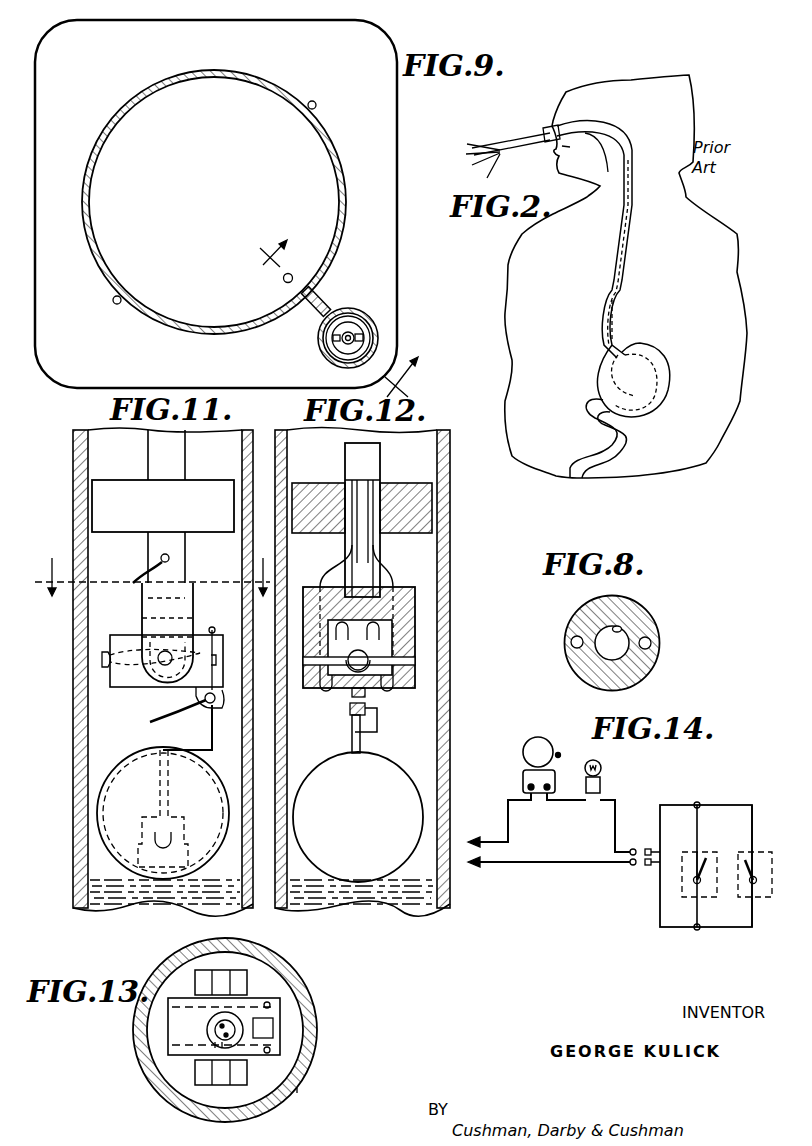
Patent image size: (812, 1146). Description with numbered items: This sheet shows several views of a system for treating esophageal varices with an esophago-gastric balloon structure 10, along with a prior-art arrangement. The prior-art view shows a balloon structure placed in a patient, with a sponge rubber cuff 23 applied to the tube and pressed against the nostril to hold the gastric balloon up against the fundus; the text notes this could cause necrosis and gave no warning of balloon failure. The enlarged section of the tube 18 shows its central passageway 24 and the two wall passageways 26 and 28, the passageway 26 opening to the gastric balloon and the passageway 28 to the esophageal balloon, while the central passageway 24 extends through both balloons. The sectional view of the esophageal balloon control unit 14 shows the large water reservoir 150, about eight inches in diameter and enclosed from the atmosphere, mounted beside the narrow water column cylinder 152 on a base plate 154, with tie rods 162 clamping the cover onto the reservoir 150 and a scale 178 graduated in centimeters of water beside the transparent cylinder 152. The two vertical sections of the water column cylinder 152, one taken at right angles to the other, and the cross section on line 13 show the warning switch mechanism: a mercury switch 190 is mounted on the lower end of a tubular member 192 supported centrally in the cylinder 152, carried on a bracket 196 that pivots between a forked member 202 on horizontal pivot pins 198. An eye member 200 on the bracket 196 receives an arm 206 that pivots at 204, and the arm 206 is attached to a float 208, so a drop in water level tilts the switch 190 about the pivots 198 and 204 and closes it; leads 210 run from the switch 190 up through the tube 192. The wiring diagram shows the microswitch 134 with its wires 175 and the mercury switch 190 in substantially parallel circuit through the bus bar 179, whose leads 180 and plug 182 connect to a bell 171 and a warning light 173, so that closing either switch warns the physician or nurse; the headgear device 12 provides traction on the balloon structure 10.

In FIG. 9, the esophago-gastric balloon structure 10 is at (351, 318).
In FIG. 2, the esophago-gastric balloon structure 10 is at (634, 323).
In FIG. 14, the headgear device 12 is at (745, 905).
In FIG. 11, the section line 13— 13 is at (155, 567).
In FIG. 14, the esophageal balloon control unit 14 is at (683, 890).
In FIG. 2, the tube portion 18 is at (521, 142).
In FIG. 8, the tube portion 18 is at (648, 676).
In FIG. 2, the cuff 23 is at (546, 142).
In FIG. 8, the central passageway 24 is at (622, 630).
In FIG. 8, the passageway 26 is at (571, 645).
In FIG. 8, the passageway 28 is at (651, 645).
In FIG. 14, the microswitch 134 is at (745, 862).
In FIG. 9, the water reservoir 150 is at (336, 146).
In FIG. 9, the water column cylinder 152 is at (368, 312).
In FIG. 11, the water column cylinder 152 is at (80, 735).
In FIG. 12, the water column cylinder 152 is at (444, 690).
In FIG. 13, the water column cylinder 152 is at (308, 1000).
In FIG. 9, the base plate 154 is at (397, 150).
In FIG. 9, the tie rods 162 is at (316, 106).
In FIG. 14, the bell or buzzer 171 is at (518, 766).
In FIG. 14, the warning light 173 is at (601, 781).
In FIG. 14, the wires 175 is at (752, 808).
In FIG. 9, the scale 178 is at (310, 310).
In FIG. 14, the bus bar 179 is at (697, 805).
In FIG. 14, the leads 180 is at (659, 830).
In FIG. 14, the plug 182 is at (634, 848).
In FIG. 9, the mercury switch 190 is at (350, 331).
In FIG. 11, the mercury switch 190 is at (92, 658).
In FIG. 14, the mercury switch 190 is at (694, 883).
In FIG. 11, the tubular member 192 is at (186, 538).
In FIG. 12, the tubular member 192 is at (378, 541).
In FIG. 13, the tubular member 192 is at (205, 1035).
In FIG. 11, the bracket 196 is at (112, 635).
In FIG. 12, the bracket 196 is at (345, 692).
In FIG. 13, the bracket 196 is at (181, 998).
In FIG. 11, the pivot pins 198 is at (172, 651).
In FIG. 12, the pivot pins 198 is at (398, 660).
In FIG. 13, the pivot pins 198 is at (222, 1042).
In FIG. 11, the eye member 200 is at (216, 712).
In FIG. 12, the eye member 200 is at (378, 725).
In FIG. 11, the forked member 202 is at (195, 586).
In FIG. 12, the forked member 202 is at (418, 606).
In FIG. 13, the forked member 202 is at (232, 970).
In FIG. 12, the pivot 204 is at (352, 700).
In FIG. 13, the pivot 204 is at (312, 1050).
In FIG. 11, the arm 206 is at (208, 746).
In FIG. 12, the arm 206 is at (362, 740).
In FIG. 11, the float 208 is at (100, 852).
In FIG. 12, the float 208 is at (378, 809).
In FIG. 13, the float 208 is at (297, 1088).
In FIG. 11, the leads 210 is at (144, 575).
In FIG. 12, the leads 210 is at (365, 490).
In FIG. 14, the leads 210 is at (698, 852).
In FIG. 13, the leads 210 is at (215, 1042).